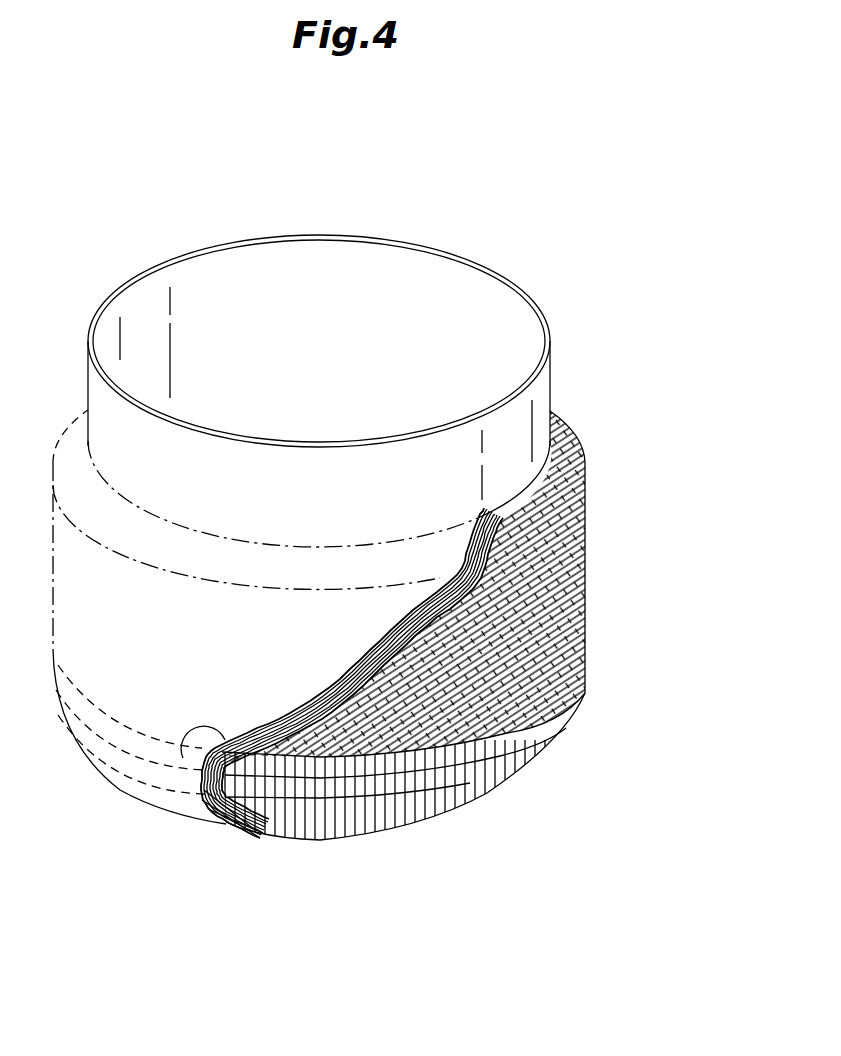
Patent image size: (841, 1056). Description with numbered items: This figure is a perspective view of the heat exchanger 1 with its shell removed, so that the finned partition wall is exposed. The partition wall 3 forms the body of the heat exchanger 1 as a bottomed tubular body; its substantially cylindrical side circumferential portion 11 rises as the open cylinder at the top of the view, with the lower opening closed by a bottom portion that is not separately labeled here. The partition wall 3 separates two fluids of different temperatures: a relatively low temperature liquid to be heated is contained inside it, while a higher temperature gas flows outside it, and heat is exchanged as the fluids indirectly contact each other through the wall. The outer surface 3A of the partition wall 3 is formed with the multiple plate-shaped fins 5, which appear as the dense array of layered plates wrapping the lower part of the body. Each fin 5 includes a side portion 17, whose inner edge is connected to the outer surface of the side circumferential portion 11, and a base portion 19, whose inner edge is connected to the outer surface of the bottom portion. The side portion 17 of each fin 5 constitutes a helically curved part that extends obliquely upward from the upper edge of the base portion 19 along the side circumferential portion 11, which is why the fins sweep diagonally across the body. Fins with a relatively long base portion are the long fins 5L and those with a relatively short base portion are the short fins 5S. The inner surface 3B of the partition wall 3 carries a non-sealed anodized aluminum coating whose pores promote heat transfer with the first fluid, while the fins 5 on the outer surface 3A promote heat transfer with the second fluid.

The heat exchanger 1 is at (532, 161).
The partition wall 3 is at (578, 300).
The outer surface 3A is at (551, 388).
The inner surface 3B is at (428, 266).
The side circumferential portion 11 is at (510, 439).
The plate-shaped fin 5 is at (606, 592).
The long fin 5L is at (300, 678).
The short fin 5S is at (274, 696).
The side portion 17 is at (183, 758).
The base portion 19 is at (212, 818).